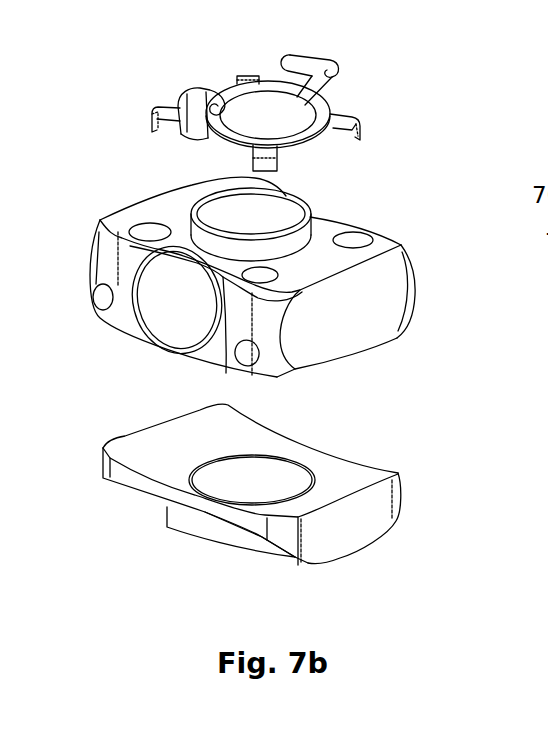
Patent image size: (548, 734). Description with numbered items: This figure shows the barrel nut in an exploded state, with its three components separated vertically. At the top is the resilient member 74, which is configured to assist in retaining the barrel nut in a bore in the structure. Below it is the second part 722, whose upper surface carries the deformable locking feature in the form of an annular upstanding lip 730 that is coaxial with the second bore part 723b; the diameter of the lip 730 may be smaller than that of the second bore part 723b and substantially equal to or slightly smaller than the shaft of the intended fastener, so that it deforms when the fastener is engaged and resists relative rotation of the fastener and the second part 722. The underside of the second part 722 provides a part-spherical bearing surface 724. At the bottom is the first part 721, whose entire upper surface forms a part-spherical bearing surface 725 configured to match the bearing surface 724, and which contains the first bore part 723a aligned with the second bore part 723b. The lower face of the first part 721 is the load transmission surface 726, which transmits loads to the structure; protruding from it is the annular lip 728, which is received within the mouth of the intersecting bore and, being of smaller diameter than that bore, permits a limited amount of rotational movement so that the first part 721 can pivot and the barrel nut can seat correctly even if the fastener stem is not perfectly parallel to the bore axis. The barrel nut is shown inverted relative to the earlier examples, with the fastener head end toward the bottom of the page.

The resilient member 74 is at (196, 97).
The second part 722 is at (289, 270).
The second bore part 723b is at (242, 222).
The deformable locking feature 730 is at (300, 232).
The bearing surface 724 is at (327, 359).
The first part 721 is at (248, 493).
The bearing surface 725 is at (158, 448).
The first bore part 723a is at (270, 472).
The annular lip 728 is at (193, 523).
The load transmission surface 726 is at (265, 535).